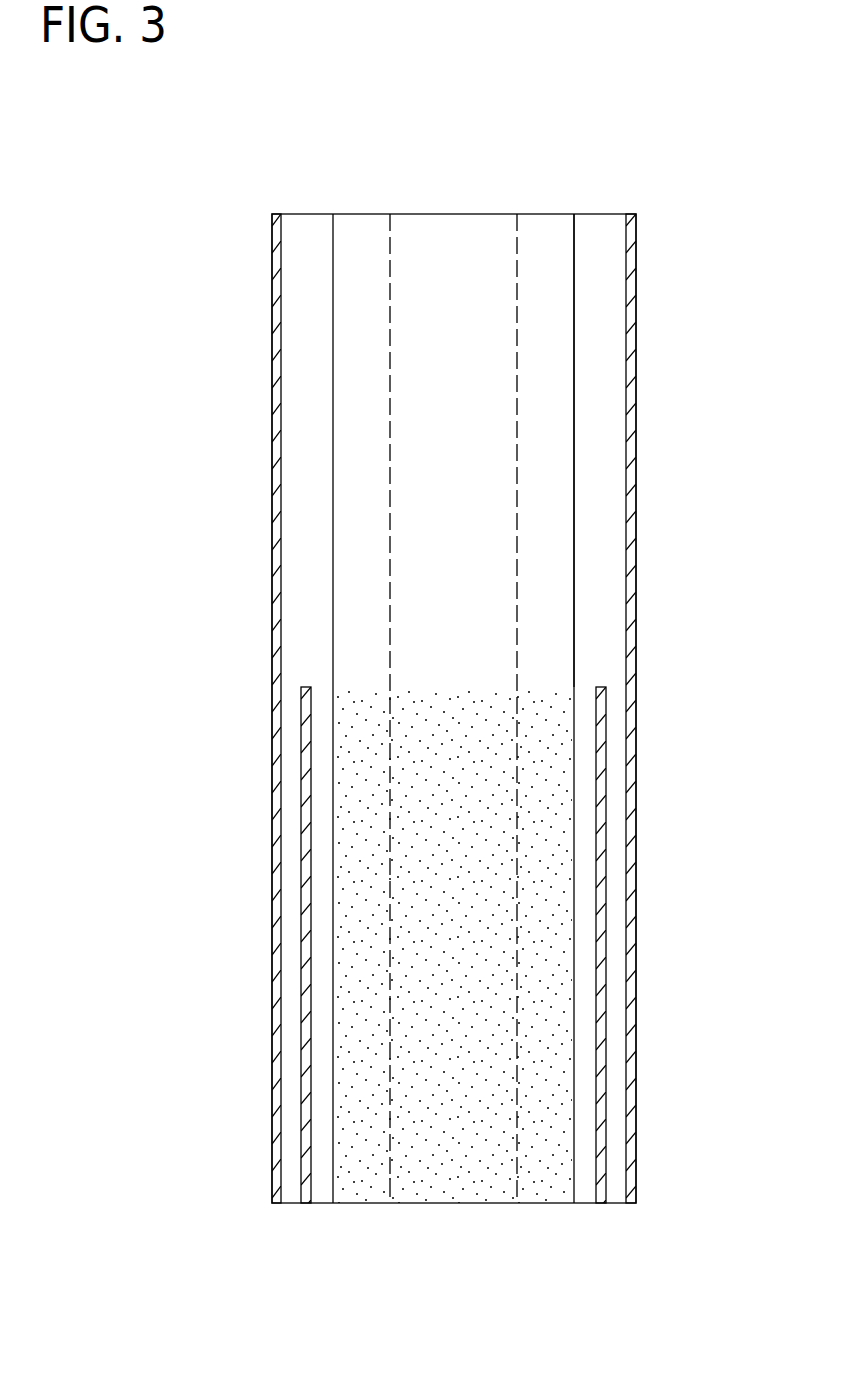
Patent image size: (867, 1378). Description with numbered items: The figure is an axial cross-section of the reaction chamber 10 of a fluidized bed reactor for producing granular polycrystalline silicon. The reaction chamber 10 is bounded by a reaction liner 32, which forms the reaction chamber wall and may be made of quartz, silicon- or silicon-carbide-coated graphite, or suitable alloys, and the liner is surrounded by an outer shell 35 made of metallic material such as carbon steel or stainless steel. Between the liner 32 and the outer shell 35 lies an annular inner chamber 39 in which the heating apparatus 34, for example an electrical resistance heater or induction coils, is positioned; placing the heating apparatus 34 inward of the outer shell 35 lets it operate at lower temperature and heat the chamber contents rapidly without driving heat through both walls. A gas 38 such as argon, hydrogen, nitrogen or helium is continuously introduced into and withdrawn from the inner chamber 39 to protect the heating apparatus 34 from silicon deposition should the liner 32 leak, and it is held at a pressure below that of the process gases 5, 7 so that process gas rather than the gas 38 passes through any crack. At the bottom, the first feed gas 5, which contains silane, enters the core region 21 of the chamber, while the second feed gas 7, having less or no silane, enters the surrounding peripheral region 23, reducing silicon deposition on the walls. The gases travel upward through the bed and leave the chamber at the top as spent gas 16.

The reaction chamber 10 is at (199, 168).
The spent gas 16 is at (454, 214).
The core region 21 is at (484, 228).
The peripheral region 23 is at (542, 234).
The outer shell 35 is at (632, 230).
The reaction liner 32 is at (575, 290).
The annular inner chamber 39 is at (598, 663).
The heating apparatus 34 is at (600, 975).
The gas 38 is at (321, 1218).
The second feed gas 7 is at (363, 1218).
The first feed gas 5 is at (453, 1218).